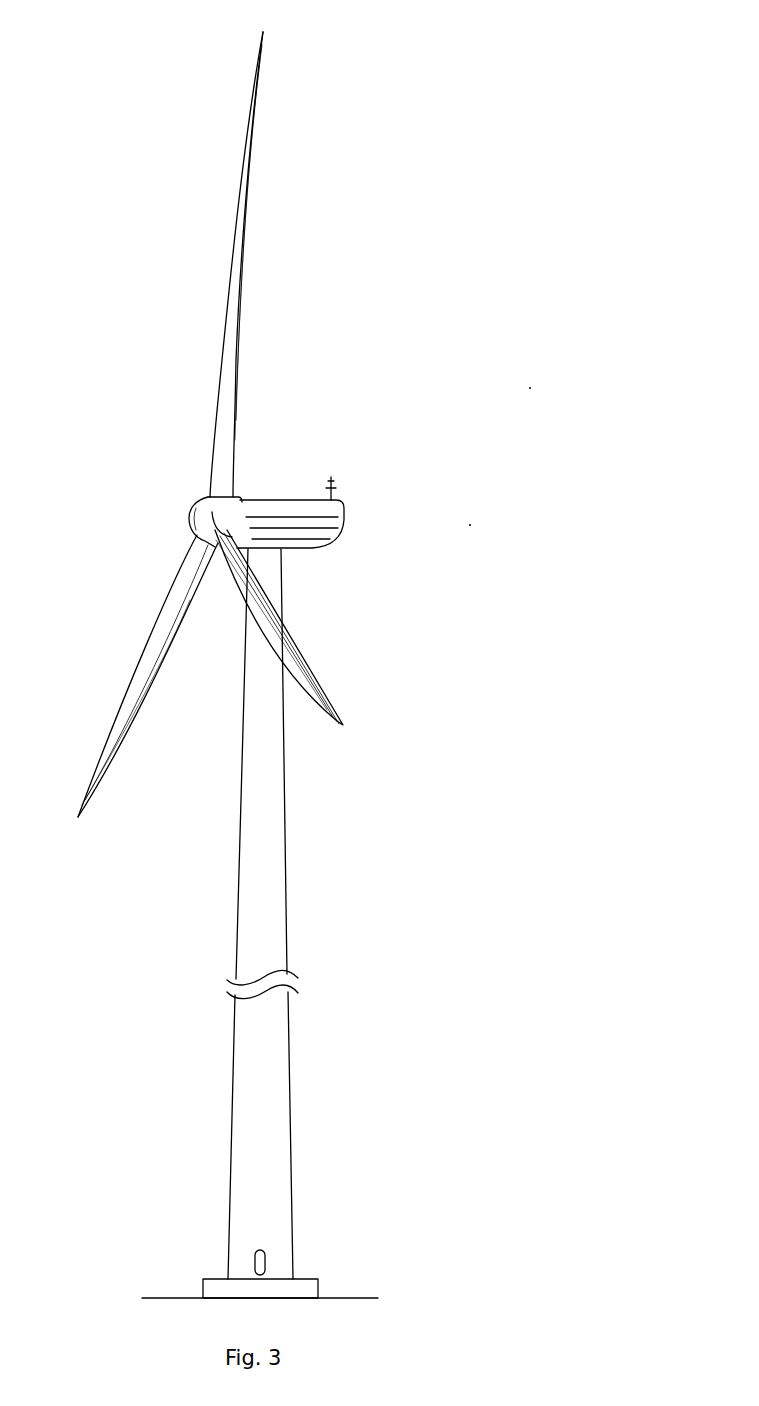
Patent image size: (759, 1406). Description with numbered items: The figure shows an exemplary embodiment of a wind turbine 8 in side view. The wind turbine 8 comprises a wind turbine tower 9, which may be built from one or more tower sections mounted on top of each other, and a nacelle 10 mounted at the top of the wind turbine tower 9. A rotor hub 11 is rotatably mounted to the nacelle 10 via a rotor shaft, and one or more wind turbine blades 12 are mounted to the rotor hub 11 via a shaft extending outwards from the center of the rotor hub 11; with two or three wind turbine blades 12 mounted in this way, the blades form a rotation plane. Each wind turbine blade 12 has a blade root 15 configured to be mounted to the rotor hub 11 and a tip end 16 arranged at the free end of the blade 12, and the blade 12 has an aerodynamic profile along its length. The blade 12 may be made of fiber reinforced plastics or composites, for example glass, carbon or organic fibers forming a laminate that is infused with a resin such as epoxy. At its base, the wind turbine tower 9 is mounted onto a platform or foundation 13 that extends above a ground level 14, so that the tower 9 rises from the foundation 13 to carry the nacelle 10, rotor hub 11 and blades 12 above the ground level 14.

The wind turbine 8 is at (287, 665).
The wind turbine tower 9 is at (267, 785).
The nacelle 10 is at (292, 510).
The rotor hub 11 is at (207, 511).
The wind turbine blade 12 is at (230, 312).
The foundation 13 is at (302, 1287).
The ground level 14 is at (352, 1298).
The blade root 15 is at (220, 515).
The tip end 16 is at (348, 726).